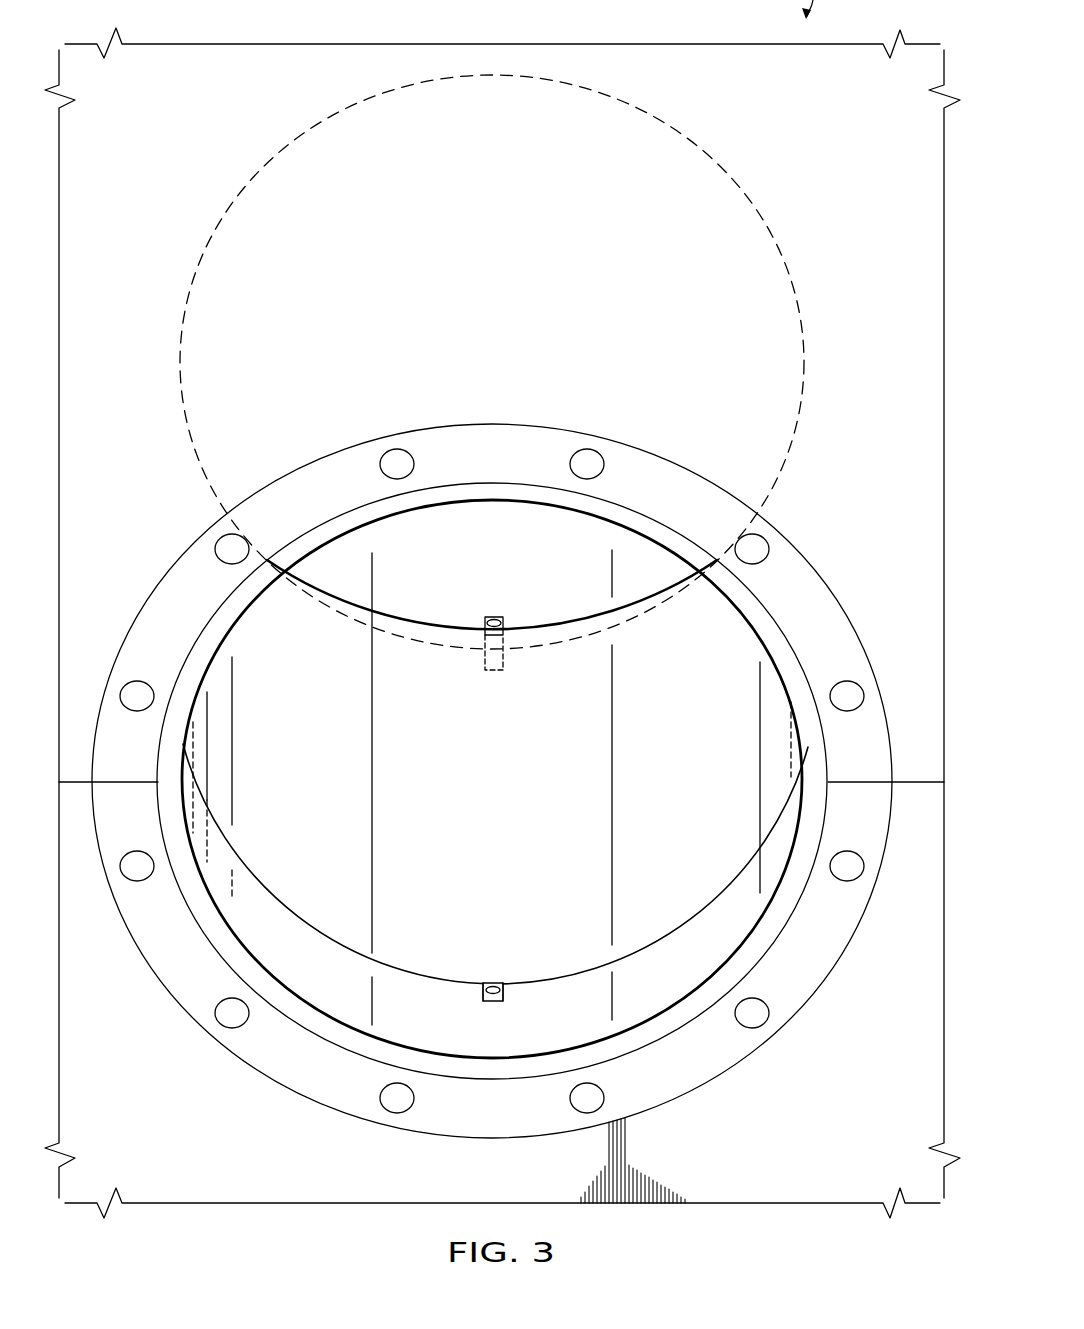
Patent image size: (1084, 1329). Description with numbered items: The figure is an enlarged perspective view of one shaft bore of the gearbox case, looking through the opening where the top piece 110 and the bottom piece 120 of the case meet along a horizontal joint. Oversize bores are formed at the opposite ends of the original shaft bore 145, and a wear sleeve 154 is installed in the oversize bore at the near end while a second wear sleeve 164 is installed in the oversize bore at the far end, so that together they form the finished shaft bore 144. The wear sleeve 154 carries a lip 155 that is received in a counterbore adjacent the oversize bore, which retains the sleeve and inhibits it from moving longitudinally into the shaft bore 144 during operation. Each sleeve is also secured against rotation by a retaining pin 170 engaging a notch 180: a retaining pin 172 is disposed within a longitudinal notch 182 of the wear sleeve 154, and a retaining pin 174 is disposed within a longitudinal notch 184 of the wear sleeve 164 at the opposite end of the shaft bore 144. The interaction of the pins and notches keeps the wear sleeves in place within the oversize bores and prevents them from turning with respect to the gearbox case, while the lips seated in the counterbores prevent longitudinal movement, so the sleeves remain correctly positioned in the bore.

The top piece 110 is at (154, 496).
The bottom piece 120 is at (165, 1147).
The shaft bore 144 is at (670, 886).
The original shaft bore 145 is at (637, 927).
The wear sleeve 154 is at (303, 973).
The lip 155 is at (778, 925).
The wear sleeve 164 is at (335, 572).
The retaining pin 170 is at (492, 1014).
The retaining pin 172 is at (492, 982).
The retaining pin 174 is at (492, 617).
The notch 180 is at (470, 999).
The longitudinal notch 182 is at (506, 992).
The longitudinal notch 184 is at (500, 672).